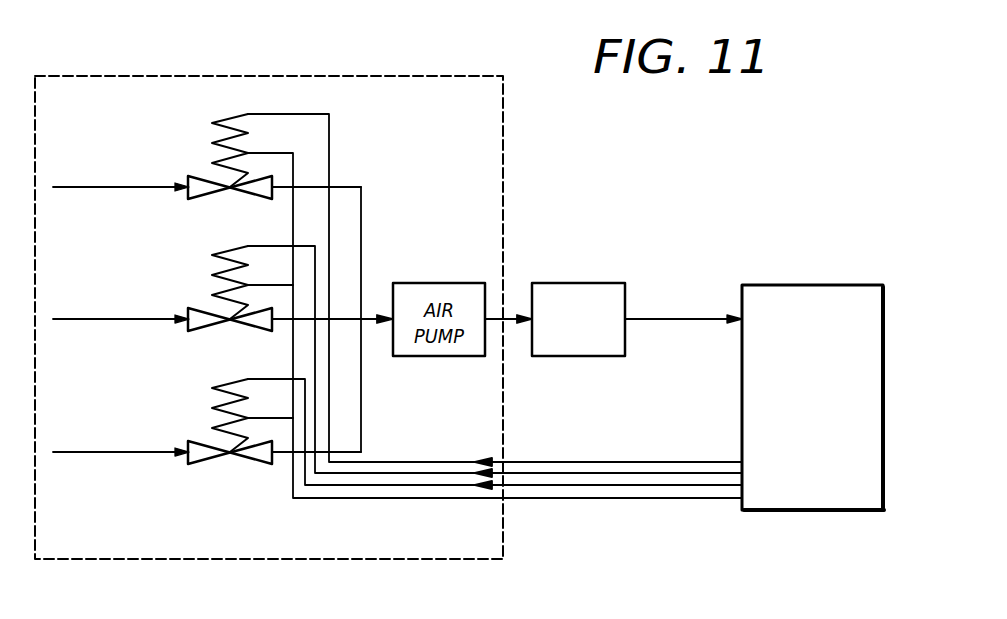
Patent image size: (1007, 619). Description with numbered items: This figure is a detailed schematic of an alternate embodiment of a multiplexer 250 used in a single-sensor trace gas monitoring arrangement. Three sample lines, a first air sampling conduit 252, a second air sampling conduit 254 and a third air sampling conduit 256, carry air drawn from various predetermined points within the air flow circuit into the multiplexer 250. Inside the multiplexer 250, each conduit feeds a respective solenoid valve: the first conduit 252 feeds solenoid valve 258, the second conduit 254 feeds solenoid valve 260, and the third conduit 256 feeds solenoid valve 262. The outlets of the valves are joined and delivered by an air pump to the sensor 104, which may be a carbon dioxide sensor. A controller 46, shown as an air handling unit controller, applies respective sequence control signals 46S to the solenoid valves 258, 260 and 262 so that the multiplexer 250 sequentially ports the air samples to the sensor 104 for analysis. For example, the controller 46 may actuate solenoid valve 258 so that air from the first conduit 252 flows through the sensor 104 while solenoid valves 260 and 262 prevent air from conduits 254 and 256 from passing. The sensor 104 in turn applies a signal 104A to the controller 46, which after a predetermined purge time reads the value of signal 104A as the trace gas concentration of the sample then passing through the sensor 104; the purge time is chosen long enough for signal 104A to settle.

The multiplexer 250 is at (503, 138).
The first air sampling conduit 252 is at (84, 188).
The second air sampling conduit 254 is at (84, 320).
The third air sampling conduit 256 is at (84, 453).
The solenoid valve 258 is at (203, 199).
The solenoid valve 260 is at (203, 331).
The solenoid valve 262 is at (203, 464).
The sensor 104 is at (600, 283).
The signal 104A is at (718, 318).
The controller 46 is at (852, 285).
The sequence control signals 46S is at (708, 499).